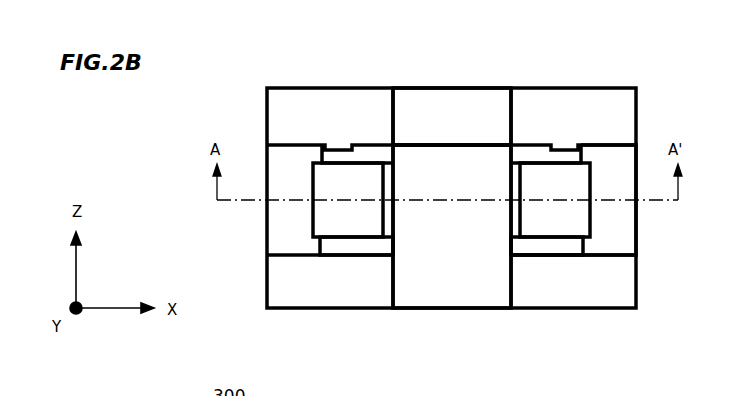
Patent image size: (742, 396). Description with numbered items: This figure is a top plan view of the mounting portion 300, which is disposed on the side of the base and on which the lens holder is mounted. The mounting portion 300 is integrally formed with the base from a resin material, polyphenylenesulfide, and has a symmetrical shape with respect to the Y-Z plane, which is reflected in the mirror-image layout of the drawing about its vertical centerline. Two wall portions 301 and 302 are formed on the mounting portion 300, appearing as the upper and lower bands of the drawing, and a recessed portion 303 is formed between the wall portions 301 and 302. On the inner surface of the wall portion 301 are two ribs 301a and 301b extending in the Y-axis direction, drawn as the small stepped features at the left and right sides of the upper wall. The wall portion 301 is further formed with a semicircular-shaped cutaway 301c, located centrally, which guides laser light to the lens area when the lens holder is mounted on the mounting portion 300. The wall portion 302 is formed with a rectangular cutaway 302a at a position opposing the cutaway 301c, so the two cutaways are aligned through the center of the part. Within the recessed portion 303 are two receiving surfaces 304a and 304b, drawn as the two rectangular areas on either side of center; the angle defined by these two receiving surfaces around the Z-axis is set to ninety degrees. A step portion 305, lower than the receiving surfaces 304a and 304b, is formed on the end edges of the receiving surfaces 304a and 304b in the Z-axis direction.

The mounting portion 300 is at (282, 88).
The wall portion 301 is at (607, 103).
The rib 301a is at (340, 143).
The rib 301b is at (560, 142).
The semicircular-shaped cutaway 301c is at (452, 95).
The wall portion 302 is at (612, 302).
The rectangular cutaway 302a is at (452, 290).
The recessed portion 303 is at (610, 220).
The receiving surface 304a is at (345, 220).
The receiving surface 304b is at (542, 220).
The step portion 305 is at (368, 248).